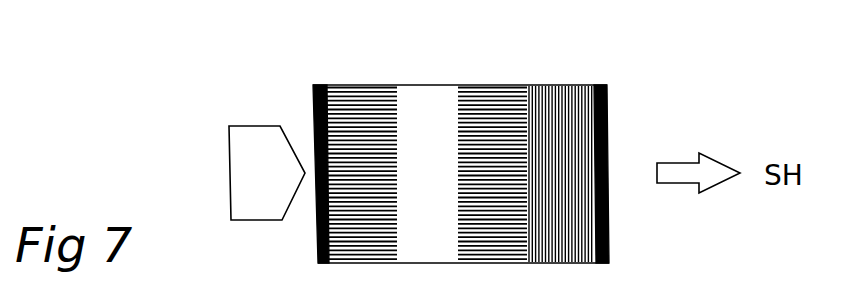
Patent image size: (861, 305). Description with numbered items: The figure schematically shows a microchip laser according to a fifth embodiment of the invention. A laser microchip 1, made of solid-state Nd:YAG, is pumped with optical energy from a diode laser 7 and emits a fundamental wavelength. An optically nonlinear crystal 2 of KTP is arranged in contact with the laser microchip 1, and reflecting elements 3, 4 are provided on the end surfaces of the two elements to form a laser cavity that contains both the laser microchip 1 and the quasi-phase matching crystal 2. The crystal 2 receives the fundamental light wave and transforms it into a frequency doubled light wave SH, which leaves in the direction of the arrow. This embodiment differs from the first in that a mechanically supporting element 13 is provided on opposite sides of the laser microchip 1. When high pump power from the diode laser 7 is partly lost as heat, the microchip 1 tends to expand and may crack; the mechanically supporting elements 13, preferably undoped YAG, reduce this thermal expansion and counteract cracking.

The laser microchip 1 is at (440, 98).
The optically nonlinear crystal 2 is at (563, 86).
The reflecting element 3 is at (317, 109).
The reflecting element 4 is at (607, 112).
The diode laser 7 is at (253, 147).
The mechanically supporting element 13 is at (370, 85).